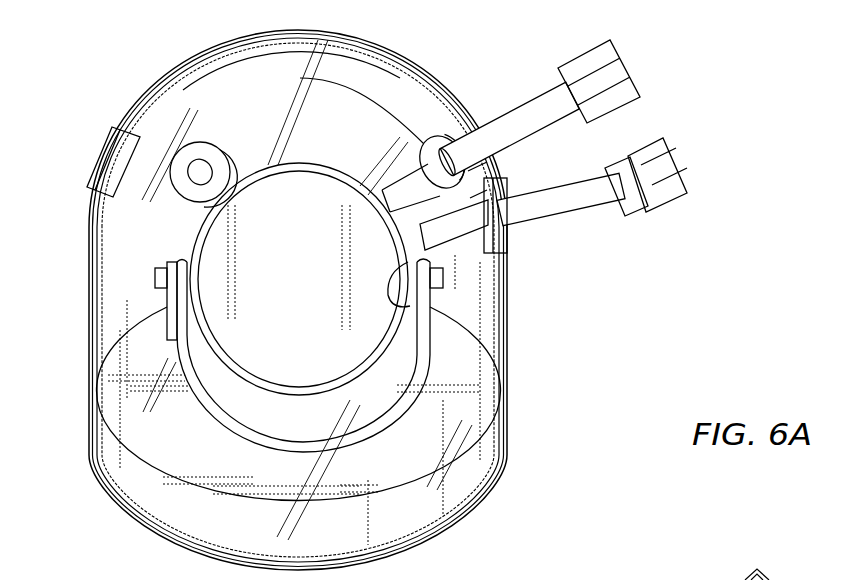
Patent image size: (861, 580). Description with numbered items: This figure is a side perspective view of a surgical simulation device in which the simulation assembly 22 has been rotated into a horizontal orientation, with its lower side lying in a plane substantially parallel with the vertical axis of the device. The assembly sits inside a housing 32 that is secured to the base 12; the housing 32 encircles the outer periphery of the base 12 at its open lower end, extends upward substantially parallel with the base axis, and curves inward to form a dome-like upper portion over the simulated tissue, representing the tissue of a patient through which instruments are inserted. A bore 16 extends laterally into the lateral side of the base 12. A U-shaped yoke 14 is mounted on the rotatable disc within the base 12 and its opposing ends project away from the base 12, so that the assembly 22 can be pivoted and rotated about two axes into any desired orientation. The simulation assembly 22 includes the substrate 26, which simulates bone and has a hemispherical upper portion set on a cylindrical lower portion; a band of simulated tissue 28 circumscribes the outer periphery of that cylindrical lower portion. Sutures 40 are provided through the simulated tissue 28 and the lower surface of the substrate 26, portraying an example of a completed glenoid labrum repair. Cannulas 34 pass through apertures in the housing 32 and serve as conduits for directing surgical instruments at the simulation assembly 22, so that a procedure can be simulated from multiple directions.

The base 12 is at (480, 443).
The yoke 14 is at (170, 343).
The bore 16 is at (300, 344).
The simulation assembly 22 is at (545, 373).
The substrate 26 is at (305, 256).
The band of simulated tissue 28 is at (190, 238).
The housing 32 is at (185, 66).
The cannulas 34 is at (640, 100).
The sutures 40 is at (400, 303).